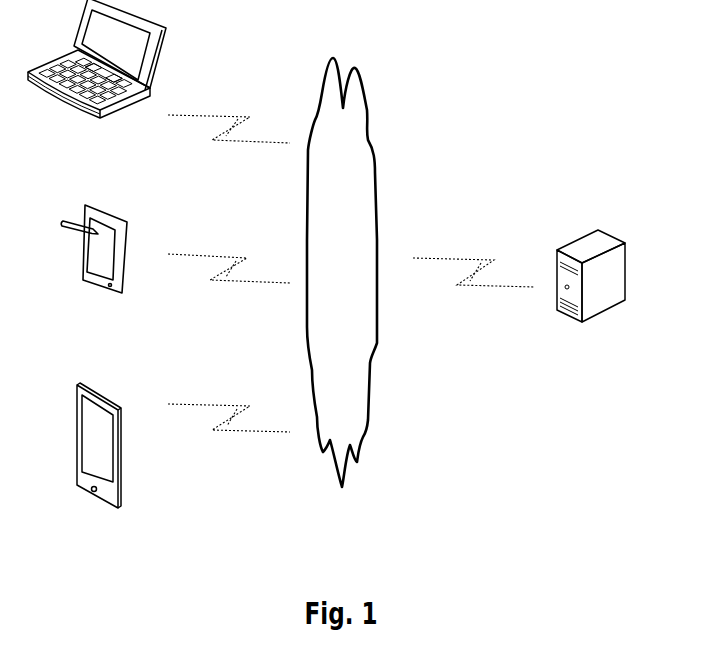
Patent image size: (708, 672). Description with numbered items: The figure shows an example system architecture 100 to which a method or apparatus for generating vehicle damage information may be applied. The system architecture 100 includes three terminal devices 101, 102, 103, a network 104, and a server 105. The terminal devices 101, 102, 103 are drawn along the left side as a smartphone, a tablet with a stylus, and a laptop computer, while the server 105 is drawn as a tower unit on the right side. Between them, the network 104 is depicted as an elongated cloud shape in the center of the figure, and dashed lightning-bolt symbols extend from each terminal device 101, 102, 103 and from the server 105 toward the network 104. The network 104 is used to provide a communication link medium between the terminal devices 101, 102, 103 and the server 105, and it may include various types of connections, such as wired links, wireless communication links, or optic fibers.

The system architecture 100 is at (577, 40).
The terminal device 101 is at (99, 468).
The terminal device 102 is at (94, 269).
The terminal device 103 is at (97, 81).
The network 104 is at (342, 272).
The server 105 is at (591, 299).